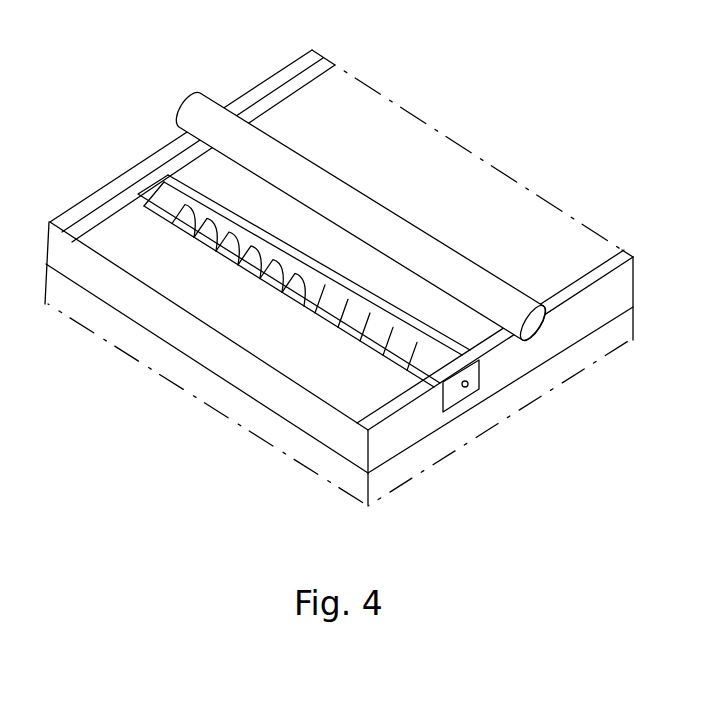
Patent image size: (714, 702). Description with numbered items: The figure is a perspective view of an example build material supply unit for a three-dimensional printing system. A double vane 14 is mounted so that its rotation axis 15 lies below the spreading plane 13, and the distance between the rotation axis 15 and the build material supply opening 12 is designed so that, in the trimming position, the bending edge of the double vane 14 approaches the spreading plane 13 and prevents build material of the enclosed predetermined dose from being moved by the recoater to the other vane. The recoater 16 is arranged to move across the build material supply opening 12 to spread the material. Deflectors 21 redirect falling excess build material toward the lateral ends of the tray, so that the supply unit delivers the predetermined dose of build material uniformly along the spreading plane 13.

The build material supply opening 12 is at (316, 255).
The spreading plane 13 is at (309, 96).
The double vane 14 is at (296, 311).
The rotation axis 15 is at (476, 396).
The recoater 16 is at (170, 81).
The deflectors 21 is at (156, 193).